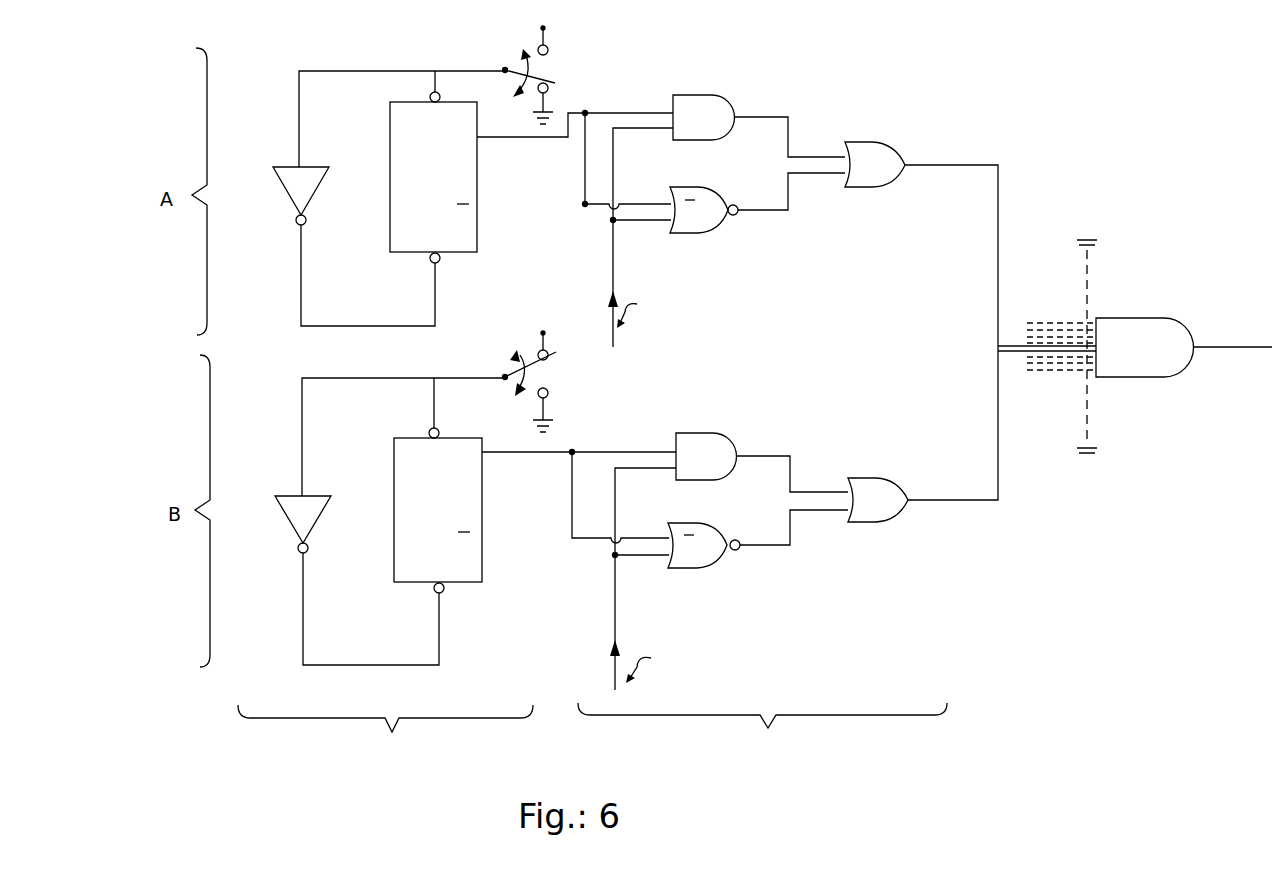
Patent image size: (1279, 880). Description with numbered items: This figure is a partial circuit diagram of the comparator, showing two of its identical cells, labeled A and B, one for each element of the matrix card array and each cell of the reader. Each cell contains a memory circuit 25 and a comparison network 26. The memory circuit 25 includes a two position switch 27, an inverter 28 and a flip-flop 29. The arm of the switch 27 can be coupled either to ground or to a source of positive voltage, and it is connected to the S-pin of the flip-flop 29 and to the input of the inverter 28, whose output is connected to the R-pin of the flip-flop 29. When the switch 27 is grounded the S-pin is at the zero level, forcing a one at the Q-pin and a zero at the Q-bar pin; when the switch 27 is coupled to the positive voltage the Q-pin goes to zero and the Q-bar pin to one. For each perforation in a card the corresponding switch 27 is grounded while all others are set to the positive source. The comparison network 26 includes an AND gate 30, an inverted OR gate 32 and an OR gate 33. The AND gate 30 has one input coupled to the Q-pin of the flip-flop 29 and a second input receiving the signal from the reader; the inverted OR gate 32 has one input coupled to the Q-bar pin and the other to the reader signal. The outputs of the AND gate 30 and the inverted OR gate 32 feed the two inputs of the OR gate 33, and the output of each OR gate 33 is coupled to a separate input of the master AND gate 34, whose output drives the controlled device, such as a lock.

The memory circuit 25 is at (436, 768).
The comparison network 26 is at (884, 762).
The two position switch 27 is at (513, 58).
The inverter 28 is at (290, 175).
The flip-flop 29 is at (413, 145).
The AND gate 30 is at (718, 100).
The inverted OR gate 32 is at (712, 222).
The OR gate 33 is at (864, 143).
The master AND gate 34 is at (1149, 346).